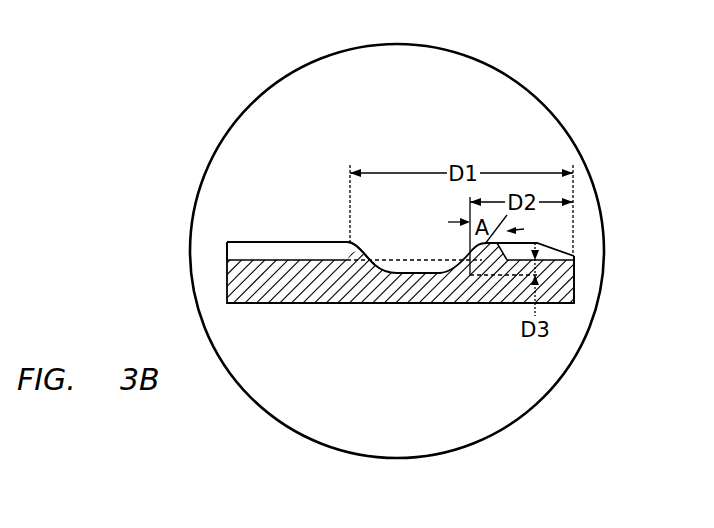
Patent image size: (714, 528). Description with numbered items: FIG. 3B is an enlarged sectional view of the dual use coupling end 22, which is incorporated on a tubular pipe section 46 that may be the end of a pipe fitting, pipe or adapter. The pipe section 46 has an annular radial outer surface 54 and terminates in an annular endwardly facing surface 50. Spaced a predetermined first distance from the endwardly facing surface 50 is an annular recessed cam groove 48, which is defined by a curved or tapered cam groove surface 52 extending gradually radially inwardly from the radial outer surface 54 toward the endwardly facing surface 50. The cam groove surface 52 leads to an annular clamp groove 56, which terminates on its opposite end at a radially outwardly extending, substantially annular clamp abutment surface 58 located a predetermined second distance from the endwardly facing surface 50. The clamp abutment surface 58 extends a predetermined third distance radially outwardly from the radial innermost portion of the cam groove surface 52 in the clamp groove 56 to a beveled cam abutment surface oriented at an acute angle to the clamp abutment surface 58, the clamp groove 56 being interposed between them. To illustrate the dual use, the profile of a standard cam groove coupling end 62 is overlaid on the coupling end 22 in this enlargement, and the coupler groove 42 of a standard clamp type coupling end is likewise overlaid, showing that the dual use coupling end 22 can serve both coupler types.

The dual use coupling end 22 is at (227, 277).
The coupler groove 42 is at (400, 270).
The tubular pipe section 46 is at (302, 260).
The annular recessed cam groove 48 is at (423, 264).
The annular endwardly facing surface 50 is at (575, 285).
The cam groove surface 52 is at (383, 267).
The annular radial outer surface 54 is at (250, 258).
The annular clamp groove 56 is at (441, 277).
The clamp abutment surface 58 is at (454, 277).
The standard cam groove coupling end 62 is at (273, 243).